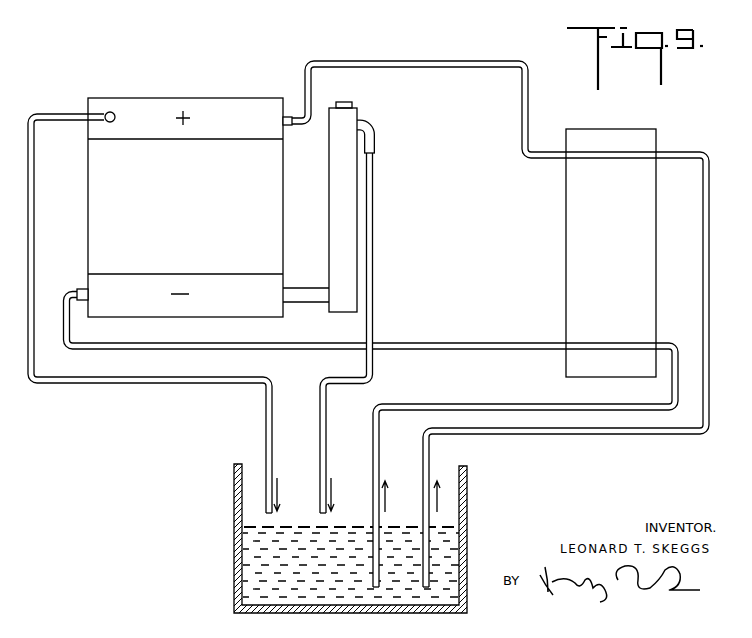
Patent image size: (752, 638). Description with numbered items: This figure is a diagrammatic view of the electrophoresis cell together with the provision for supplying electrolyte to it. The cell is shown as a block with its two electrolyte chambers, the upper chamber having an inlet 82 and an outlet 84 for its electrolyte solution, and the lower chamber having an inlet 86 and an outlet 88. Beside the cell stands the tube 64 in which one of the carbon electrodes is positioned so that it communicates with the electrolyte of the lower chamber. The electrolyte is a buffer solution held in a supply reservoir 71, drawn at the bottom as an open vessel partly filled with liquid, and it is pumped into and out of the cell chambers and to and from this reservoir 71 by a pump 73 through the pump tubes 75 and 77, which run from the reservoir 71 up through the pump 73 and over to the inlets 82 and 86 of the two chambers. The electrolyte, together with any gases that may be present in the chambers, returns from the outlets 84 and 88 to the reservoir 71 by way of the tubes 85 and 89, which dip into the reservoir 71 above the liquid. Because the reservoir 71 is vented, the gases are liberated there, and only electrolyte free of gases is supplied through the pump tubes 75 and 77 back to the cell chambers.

The tube 64 is at (329, 220).
The supply reservoir 71 is at (236, 570).
The pump 73 is at (658, 143).
The pump tube 75 is at (711, 270).
The pump tube 77 is at (490, 404).
The inlet 82 is at (290, 117).
The outlet 84 is at (113, 112).
The return tube 85 is at (63, 385).
The inlet 86 is at (80, 289).
The outlet 88 is at (374, 137).
The return tube 89 is at (320, 394).